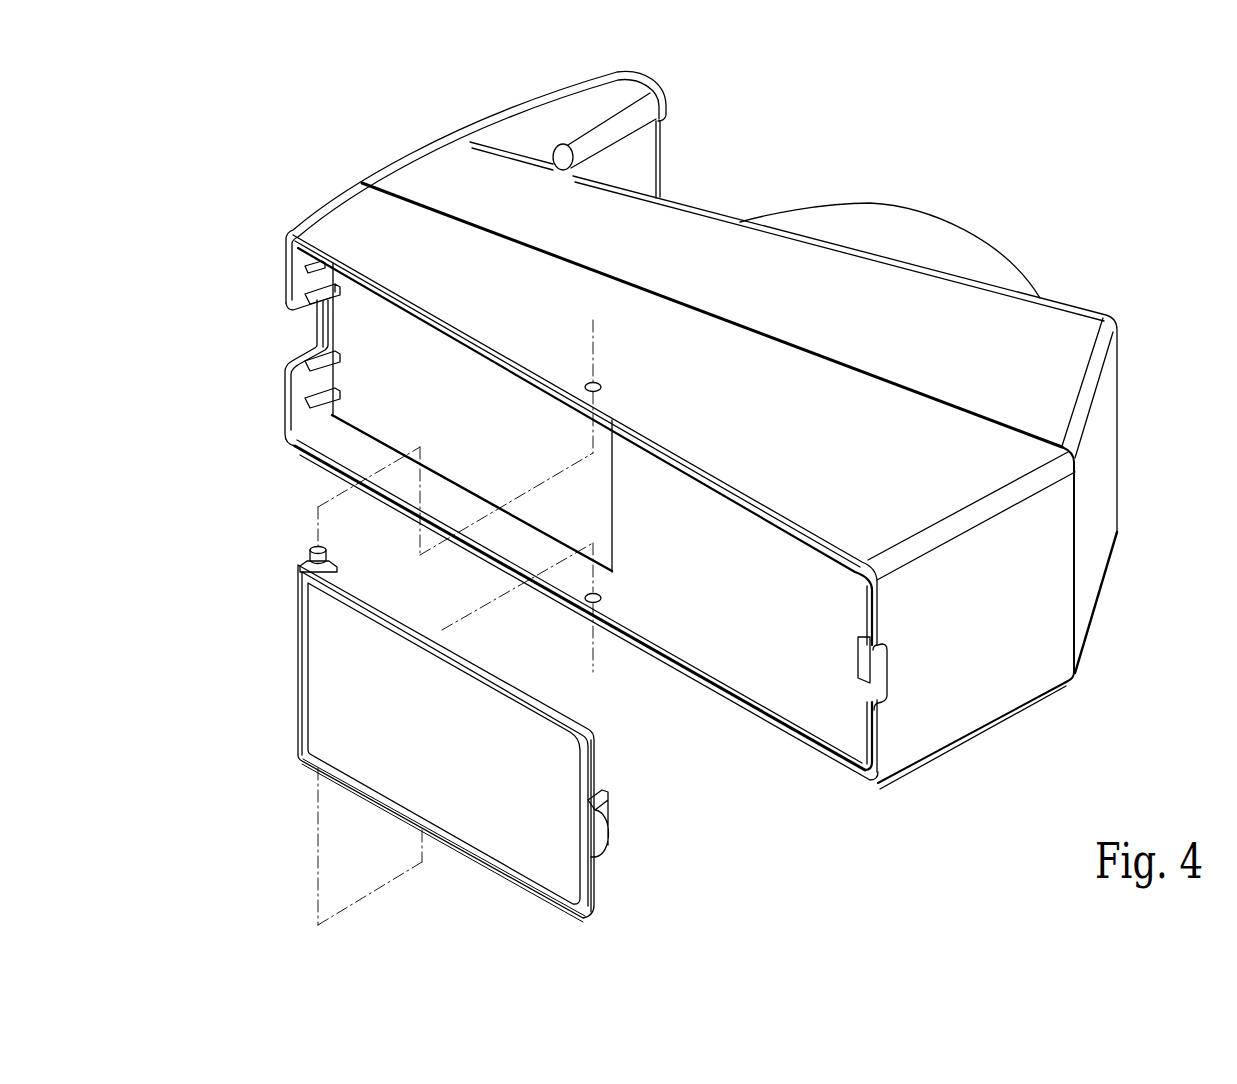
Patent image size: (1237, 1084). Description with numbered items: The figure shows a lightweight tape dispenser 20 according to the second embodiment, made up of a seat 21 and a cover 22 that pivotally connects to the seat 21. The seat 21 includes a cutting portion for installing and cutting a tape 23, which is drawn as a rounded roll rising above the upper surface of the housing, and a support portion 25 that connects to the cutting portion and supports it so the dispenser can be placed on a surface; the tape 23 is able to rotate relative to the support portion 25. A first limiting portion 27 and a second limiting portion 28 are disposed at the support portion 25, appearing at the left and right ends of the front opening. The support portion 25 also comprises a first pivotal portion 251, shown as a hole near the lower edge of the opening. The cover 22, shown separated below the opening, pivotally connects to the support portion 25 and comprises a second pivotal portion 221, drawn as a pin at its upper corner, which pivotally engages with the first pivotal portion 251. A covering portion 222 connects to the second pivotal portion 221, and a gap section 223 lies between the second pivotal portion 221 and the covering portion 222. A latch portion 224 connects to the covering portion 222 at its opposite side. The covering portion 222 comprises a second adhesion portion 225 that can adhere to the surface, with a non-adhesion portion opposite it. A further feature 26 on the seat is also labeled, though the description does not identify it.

The lightweight tape dispenser 20 is at (704, 498).
The seat 21 is at (717, 498).
The cover 22 is at (441, 718).
The second pivotal portion 221 is at (308, 550).
The covering portion 222 is at (387, 611).
The gap section 223 is at (300, 567).
The latch portion 224 is at (612, 802).
The second adhesion portion 225 is at (324, 731).
The tape 23 is at (912, 233).
The support portion 25 is at (893, 748).
The first pivotal portion 251 is at (592, 606).
The side wall recess 26 is at (330, 449).
The first limiting portion 27 is at (325, 284).
The second limiting portion 28 is at (866, 657).